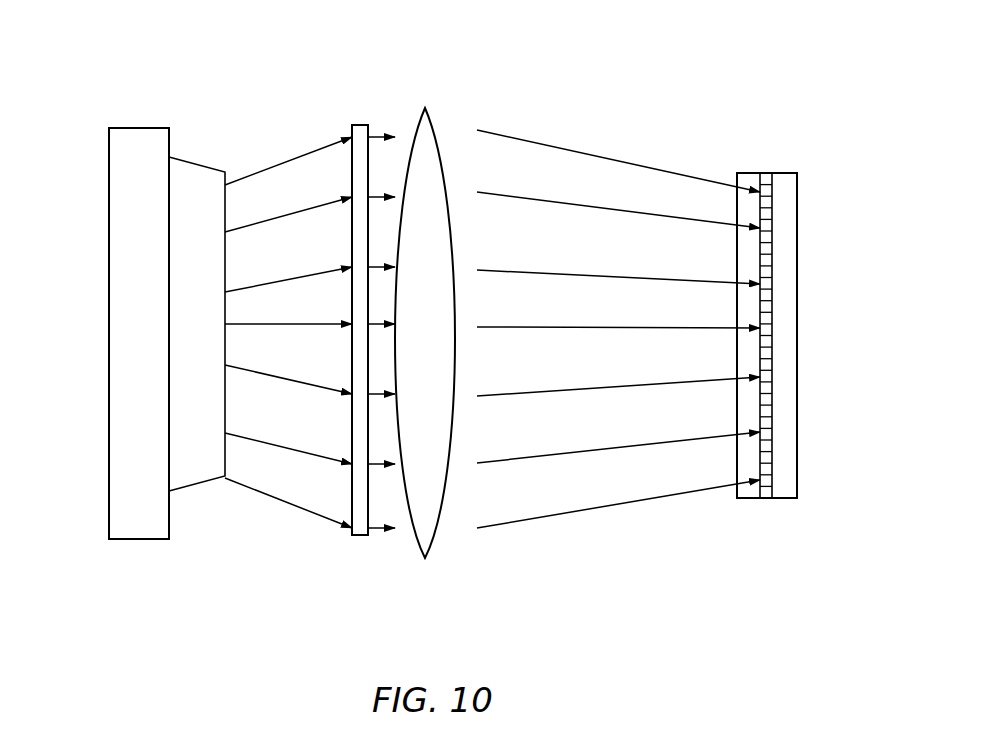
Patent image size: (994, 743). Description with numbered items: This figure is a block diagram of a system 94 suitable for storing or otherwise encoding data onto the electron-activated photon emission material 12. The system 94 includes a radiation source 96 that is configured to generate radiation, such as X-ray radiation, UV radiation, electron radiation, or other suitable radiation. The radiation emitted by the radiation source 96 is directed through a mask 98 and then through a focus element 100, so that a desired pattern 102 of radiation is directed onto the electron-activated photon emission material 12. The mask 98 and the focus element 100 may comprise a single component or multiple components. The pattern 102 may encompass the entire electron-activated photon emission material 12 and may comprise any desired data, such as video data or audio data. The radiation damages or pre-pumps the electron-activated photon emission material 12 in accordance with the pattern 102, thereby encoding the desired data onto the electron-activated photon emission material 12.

The electron-activated photon emission material 12 is at (775, 68).
The system 94 is at (116, 72).
The radiation source 96 is at (122, 128).
The mask 98 is at (354, 125).
The focus element 100 is at (425, 108).
The pattern 102 is at (723, 87).